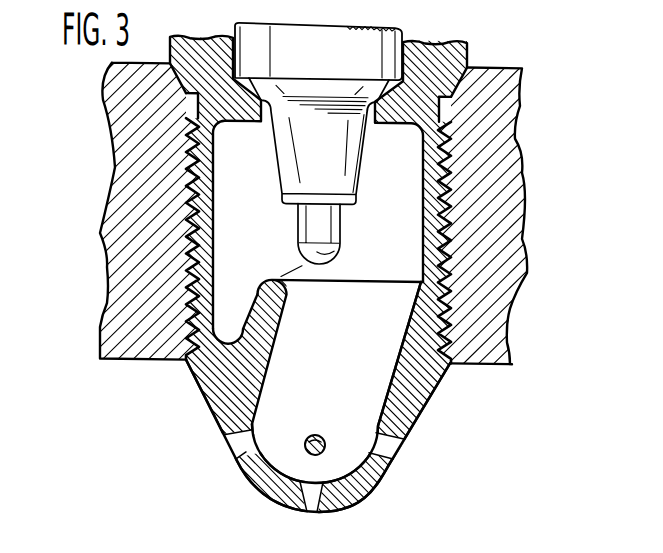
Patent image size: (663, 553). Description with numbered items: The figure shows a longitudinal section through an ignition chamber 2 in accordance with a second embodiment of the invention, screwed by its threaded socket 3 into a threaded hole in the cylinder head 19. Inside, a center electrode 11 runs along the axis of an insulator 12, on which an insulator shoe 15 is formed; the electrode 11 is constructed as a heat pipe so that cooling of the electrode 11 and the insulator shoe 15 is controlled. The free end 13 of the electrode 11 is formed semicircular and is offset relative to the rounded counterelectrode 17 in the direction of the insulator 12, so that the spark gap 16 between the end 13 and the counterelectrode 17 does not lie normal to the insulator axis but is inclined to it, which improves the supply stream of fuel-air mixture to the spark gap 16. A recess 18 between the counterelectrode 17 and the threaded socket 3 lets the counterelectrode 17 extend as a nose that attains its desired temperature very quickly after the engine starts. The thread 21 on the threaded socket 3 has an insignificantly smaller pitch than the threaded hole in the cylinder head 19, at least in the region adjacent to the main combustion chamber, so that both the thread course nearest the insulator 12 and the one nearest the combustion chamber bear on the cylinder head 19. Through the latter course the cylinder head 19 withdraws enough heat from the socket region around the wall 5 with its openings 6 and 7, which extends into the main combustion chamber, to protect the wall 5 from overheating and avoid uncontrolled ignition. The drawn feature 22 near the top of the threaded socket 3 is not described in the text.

The threaded socket 3 is at (331, 273).
The ignition chamber 2 is at (331, 287).
The wall 5 is at (315, 409).
The opening 6 is at (304, 499).
The opening 7 is at (230, 437).
The center electrode 11 is at (343, 229).
The insulator 12 is at (340, 57).
The free end 13 is at (340, 254).
The insulator shoe 15 is at (340, 163).
The spark gap 16 is at (279, 278).
The counterelectrode 17 is at (274, 281).
The recess 18 is at (216, 340).
The cylinder head 19 is at (507, 282).
The thread 21 is at (446, 208).
The thread relief recess 22 is at (464, 88).